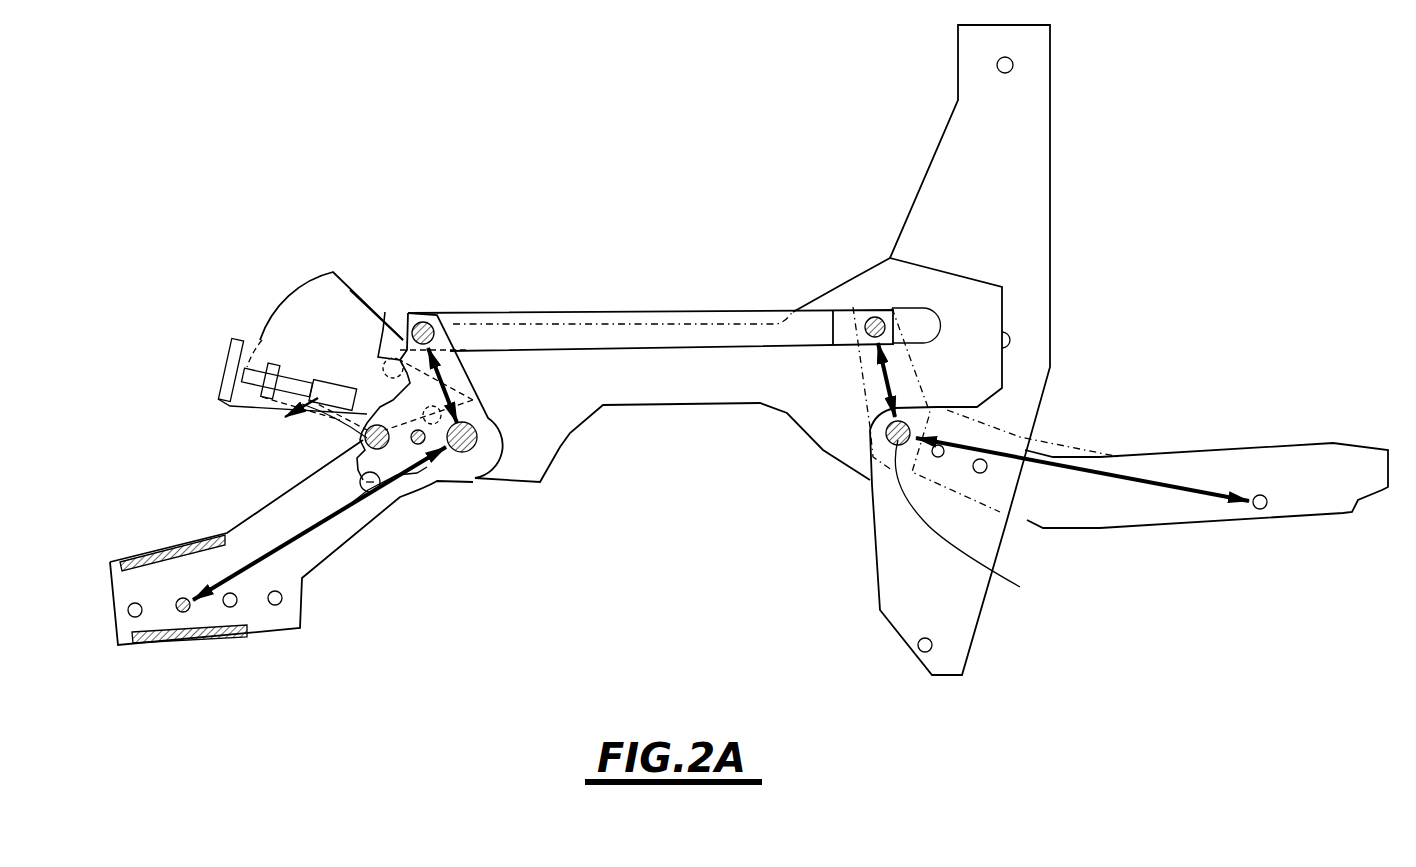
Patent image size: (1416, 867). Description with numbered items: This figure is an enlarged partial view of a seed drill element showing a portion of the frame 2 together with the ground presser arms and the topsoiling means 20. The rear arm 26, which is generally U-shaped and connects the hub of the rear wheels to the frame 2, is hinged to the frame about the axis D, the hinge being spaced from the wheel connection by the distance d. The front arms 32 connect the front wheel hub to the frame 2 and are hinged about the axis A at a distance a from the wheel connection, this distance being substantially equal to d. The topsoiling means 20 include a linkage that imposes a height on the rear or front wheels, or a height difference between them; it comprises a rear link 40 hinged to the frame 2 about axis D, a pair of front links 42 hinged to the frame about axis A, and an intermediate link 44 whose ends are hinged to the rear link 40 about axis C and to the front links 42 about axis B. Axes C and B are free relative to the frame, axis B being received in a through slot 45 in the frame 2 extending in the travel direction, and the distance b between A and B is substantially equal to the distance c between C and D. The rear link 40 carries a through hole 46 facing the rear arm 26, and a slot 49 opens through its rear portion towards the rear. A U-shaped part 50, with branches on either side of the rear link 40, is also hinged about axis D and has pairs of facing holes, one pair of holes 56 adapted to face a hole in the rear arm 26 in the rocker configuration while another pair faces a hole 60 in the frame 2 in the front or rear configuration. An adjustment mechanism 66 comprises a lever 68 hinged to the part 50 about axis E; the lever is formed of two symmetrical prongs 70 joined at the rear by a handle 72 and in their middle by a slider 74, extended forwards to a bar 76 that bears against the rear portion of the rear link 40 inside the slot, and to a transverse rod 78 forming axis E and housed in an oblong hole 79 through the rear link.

The frame 2 is at (1023, 137).
The topsoiling means 20 is at (233, 230).
The rear arm 26 is at (317, 537).
The front arms 32 is at (1137, 510).
The rear link 40 is at (457, 367).
The front links 42 is at (902, 380).
The intermediate link 44 is at (610, 312).
The through slot 45 is at (928, 322).
The through hole 46 is at (360, 478).
The slot 49 is at (400, 497).
The U-shaped part 50 is at (307, 270).
The holes 56 is at (473, 400).
The hole 60 is at (390, 367).
The adjustment mechanism 66 is at (290, 348).
The lever 68 is at (287, 416).
The prongs 70 is at (267, 363).
The handle 72 is at (223, 373).
The slider 74 is at (297, 373).
The bar 76 is at (385, 310).
The transverse rod 78 is at (442, 440).
The oblong hole 79 is at (452, 455).